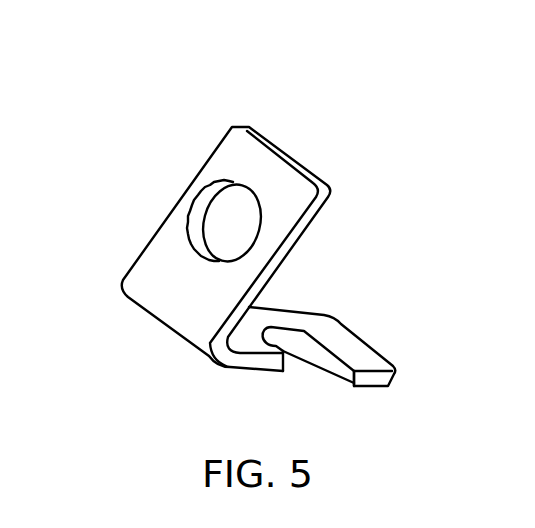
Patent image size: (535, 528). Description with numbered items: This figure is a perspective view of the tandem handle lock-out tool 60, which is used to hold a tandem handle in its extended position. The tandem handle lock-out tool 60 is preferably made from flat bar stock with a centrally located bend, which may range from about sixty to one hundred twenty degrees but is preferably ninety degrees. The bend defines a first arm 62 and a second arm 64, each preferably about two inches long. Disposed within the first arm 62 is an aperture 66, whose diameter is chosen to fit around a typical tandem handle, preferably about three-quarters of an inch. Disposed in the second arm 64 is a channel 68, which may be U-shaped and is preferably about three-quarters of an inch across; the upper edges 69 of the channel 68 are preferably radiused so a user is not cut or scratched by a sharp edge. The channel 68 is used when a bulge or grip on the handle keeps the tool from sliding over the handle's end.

The tandem handle lock-out tool 60 is at (232, 128).
The first arm 62 is at (298, 178).
The second arm 64 is at (358, 357).
The aperture 66 is at (213, 230).
The channel 68 is at (310, 372).
The upper edges 69 is at (285, 373).